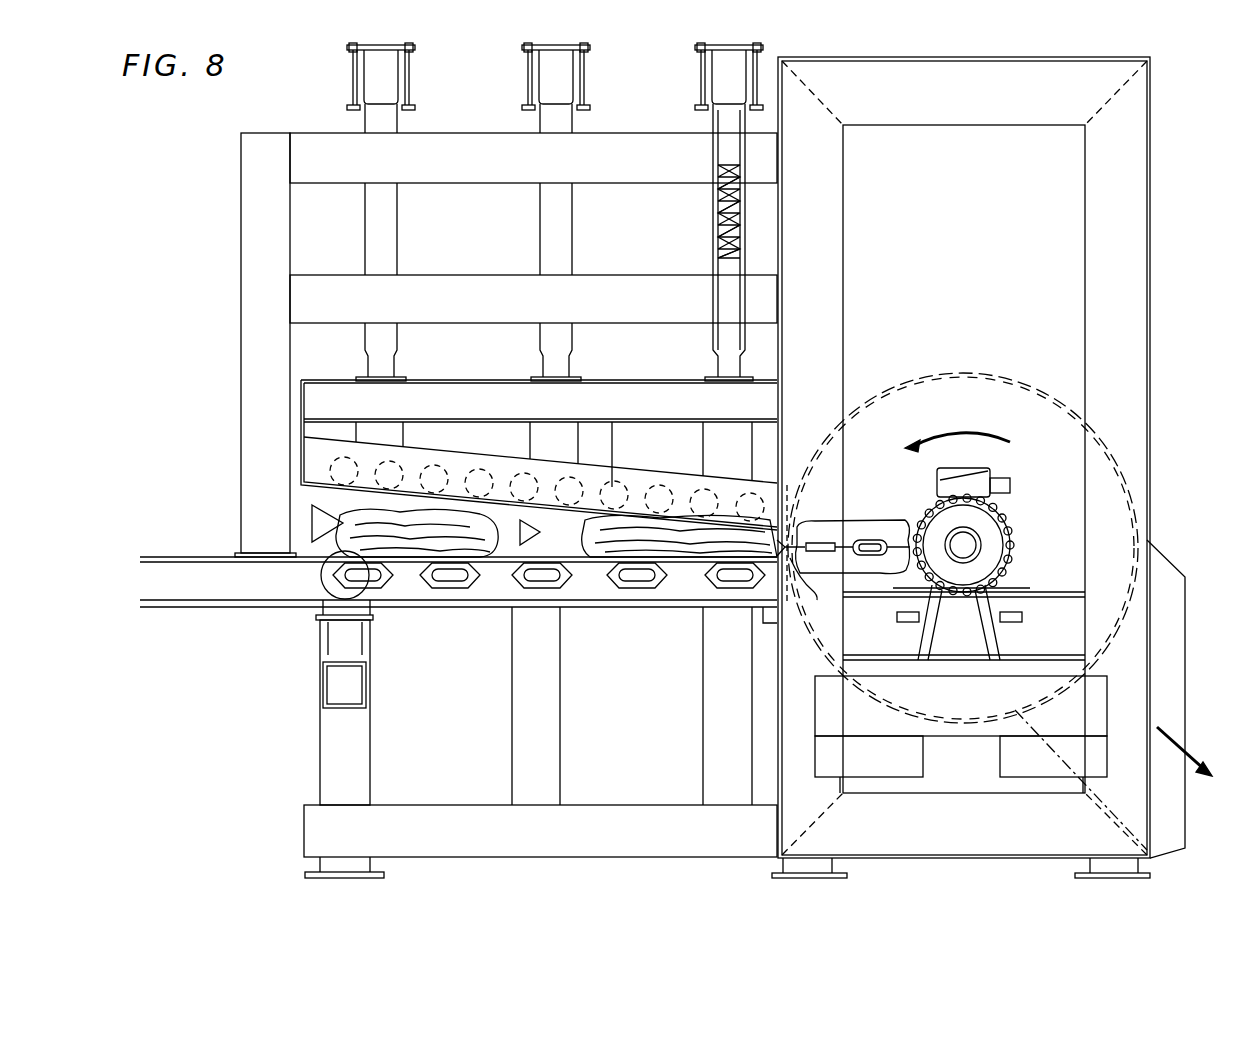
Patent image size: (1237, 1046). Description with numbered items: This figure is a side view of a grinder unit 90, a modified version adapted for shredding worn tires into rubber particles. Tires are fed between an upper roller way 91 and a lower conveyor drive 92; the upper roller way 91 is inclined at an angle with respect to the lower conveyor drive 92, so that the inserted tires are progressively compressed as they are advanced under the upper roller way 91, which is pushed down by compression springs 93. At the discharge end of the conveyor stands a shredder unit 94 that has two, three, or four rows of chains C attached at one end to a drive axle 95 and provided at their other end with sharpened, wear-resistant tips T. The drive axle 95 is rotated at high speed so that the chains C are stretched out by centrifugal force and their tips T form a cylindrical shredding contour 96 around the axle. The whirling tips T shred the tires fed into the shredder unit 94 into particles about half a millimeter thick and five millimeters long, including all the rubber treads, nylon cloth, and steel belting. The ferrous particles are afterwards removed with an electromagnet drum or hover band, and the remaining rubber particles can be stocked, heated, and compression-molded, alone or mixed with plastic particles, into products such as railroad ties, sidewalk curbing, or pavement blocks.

The grinder unit 90 is at (1004, 467).
The upper roller way 91 is at (320, 462).
The lower conveyor drive 92 is at (492, 600).
The compression springs 93 is at (726, 206).
The shredder unit 94 is at (1005, 247).
The drive axle 95 is at (975, 545).
The cylindrical shredding contour 96 is at (948, 373).
The chains C is at (876, 540).
The tips T is at (803, 581).